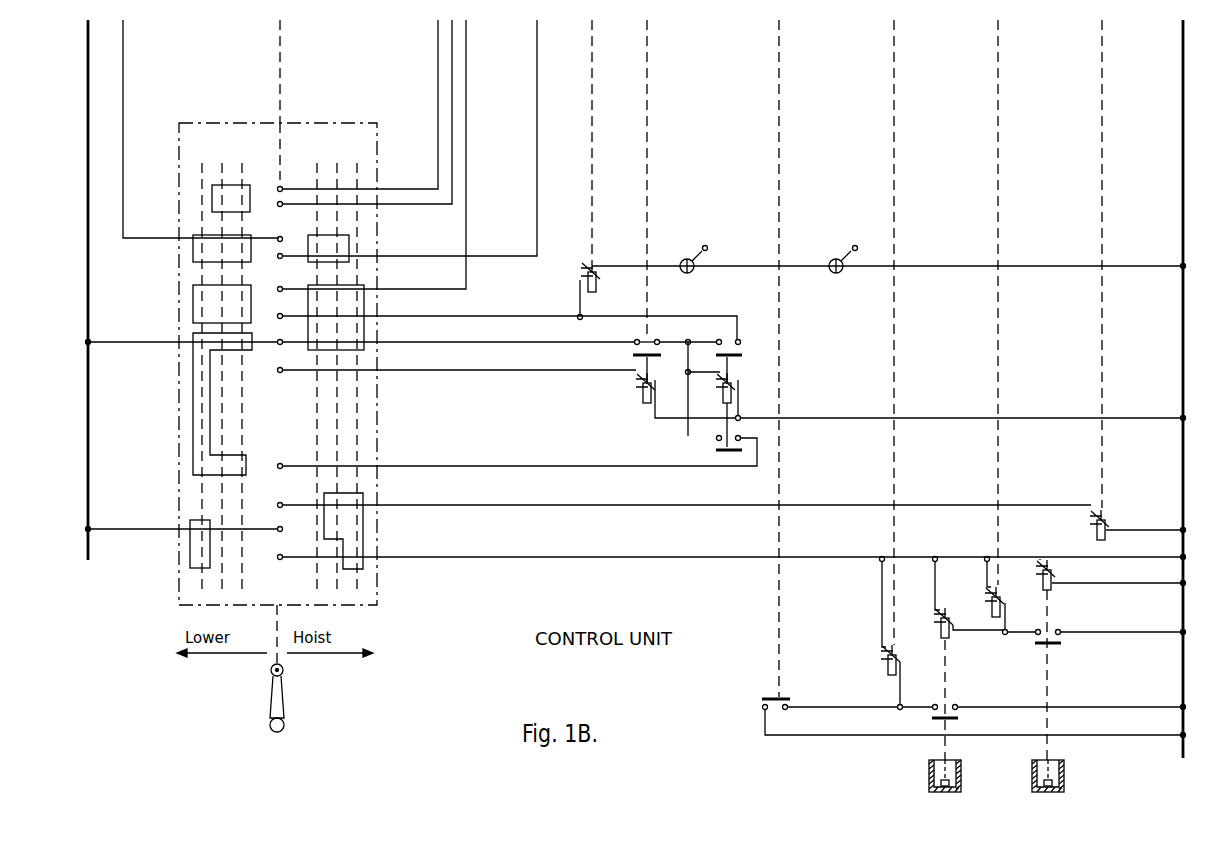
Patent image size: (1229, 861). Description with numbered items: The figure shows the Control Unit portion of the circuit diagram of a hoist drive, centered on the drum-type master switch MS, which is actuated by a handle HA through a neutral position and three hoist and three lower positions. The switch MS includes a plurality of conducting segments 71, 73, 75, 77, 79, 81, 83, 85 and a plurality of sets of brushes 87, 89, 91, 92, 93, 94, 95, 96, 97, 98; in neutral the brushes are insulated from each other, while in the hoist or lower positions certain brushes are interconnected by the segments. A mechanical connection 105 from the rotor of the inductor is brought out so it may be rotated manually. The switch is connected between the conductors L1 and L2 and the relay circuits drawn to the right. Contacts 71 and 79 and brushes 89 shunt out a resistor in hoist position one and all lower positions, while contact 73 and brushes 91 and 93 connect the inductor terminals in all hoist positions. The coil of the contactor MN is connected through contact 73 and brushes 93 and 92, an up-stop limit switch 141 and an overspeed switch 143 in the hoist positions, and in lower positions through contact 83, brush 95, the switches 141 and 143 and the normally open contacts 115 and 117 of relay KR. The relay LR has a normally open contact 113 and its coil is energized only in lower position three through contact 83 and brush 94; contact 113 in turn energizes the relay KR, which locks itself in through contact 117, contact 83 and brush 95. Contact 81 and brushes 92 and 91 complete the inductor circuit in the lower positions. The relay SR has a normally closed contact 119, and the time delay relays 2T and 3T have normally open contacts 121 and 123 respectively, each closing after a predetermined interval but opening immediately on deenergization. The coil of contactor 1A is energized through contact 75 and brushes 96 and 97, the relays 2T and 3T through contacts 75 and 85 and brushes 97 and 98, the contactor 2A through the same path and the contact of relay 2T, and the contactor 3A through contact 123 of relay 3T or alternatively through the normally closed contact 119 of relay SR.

The conducting segment 71 is at (349, 243).
The conducting segment 73 is at (364, 305).
The conducting segment 75 is at (363, 517).
The conducting segment 77 is at (212, 194).
The conducting segment 79 is at (193, 246).
The conducting segment 81 is at (193, 298).
The conducting segment 83 is at (193, 392).
The conducting segment 85 is at (190, 548).
The brushes 87 is at (280, 193).
The brushes 89 is at (283, 236).
The brush 91 is at (279, 290).
The brush 92 is at (279, 317).
The brush 93 is at (283, 340).
The brush 94 is at (280, 370).
The brush 95 is at (281, 465).
The brush 96 is at (282, 502).
The brush 97 is at (282, 527).
The brush 98 is at (279, 557).
The mechanical connection 105 is at (281, 58).
The normally open contact 113 is at (634, 348).
The normally open contact 115 is at (741, 340).
The normally open contact 117 is at (714, 447).
The normally closed contact 119 is at (790, 698).
The normally open contact 121 is at (1062, 640).
The normally open contact 123 is at (964, 694).
The up-stop limit switch 141 is at (685, 252).
The overspeed switch 143 is at (834, 252).
The master switch MS is at (352, 120).
The handle HA is at (282, 700).
The conductor L1 is at (1184, 56).
The conductor L2 is at (89, 440).
The contactor MN is at (593, 56).
The relay LR is at (648, 56).
The relay SR is at (780, 56).
The relay KR is at (737, 390).
The contactor 1A is at (1103, 56).
The contactor 2A is at (999, 56).
The contactor 3A is at (895, 56).
The time delay relay 2T is at (1056, 577).
The time delay relay 3T is at (939, 614).